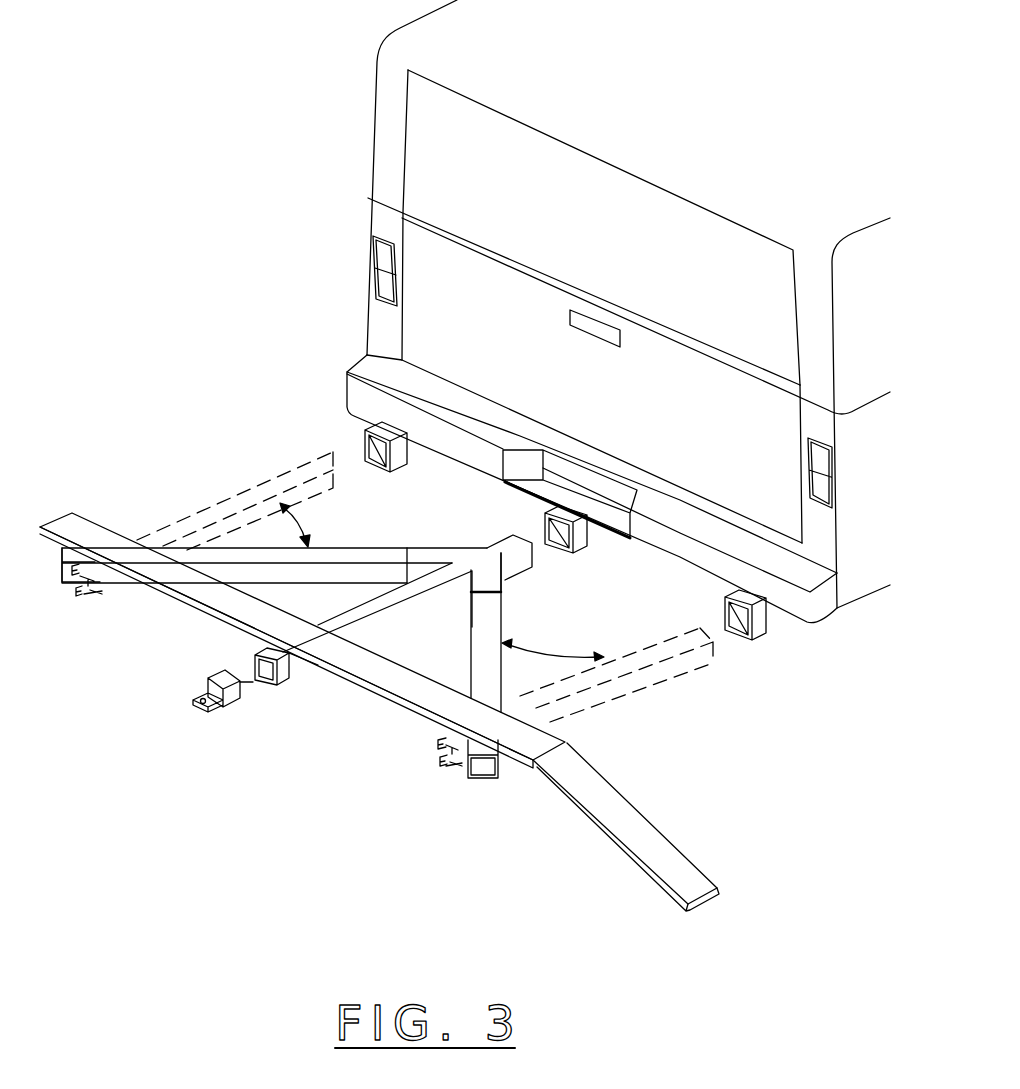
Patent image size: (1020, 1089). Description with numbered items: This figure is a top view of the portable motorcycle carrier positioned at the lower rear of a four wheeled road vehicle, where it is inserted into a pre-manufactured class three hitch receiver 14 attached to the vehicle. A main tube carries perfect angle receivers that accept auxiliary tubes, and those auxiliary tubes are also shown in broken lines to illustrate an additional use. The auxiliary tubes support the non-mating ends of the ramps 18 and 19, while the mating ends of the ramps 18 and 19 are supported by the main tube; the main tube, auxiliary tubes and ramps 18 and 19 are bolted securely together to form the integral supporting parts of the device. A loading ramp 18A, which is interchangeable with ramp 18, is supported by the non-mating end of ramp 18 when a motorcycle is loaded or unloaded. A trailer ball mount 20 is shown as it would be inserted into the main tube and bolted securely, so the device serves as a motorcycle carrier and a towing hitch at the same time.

The hitch receiver 14 is at (375, 470).
The ramp 18 is at (385, 697).
The loading ramp 18A is at (605, 837).
The ramp 19 is at (178, 597).
The trailer ball mount 20 is at (198, 708).